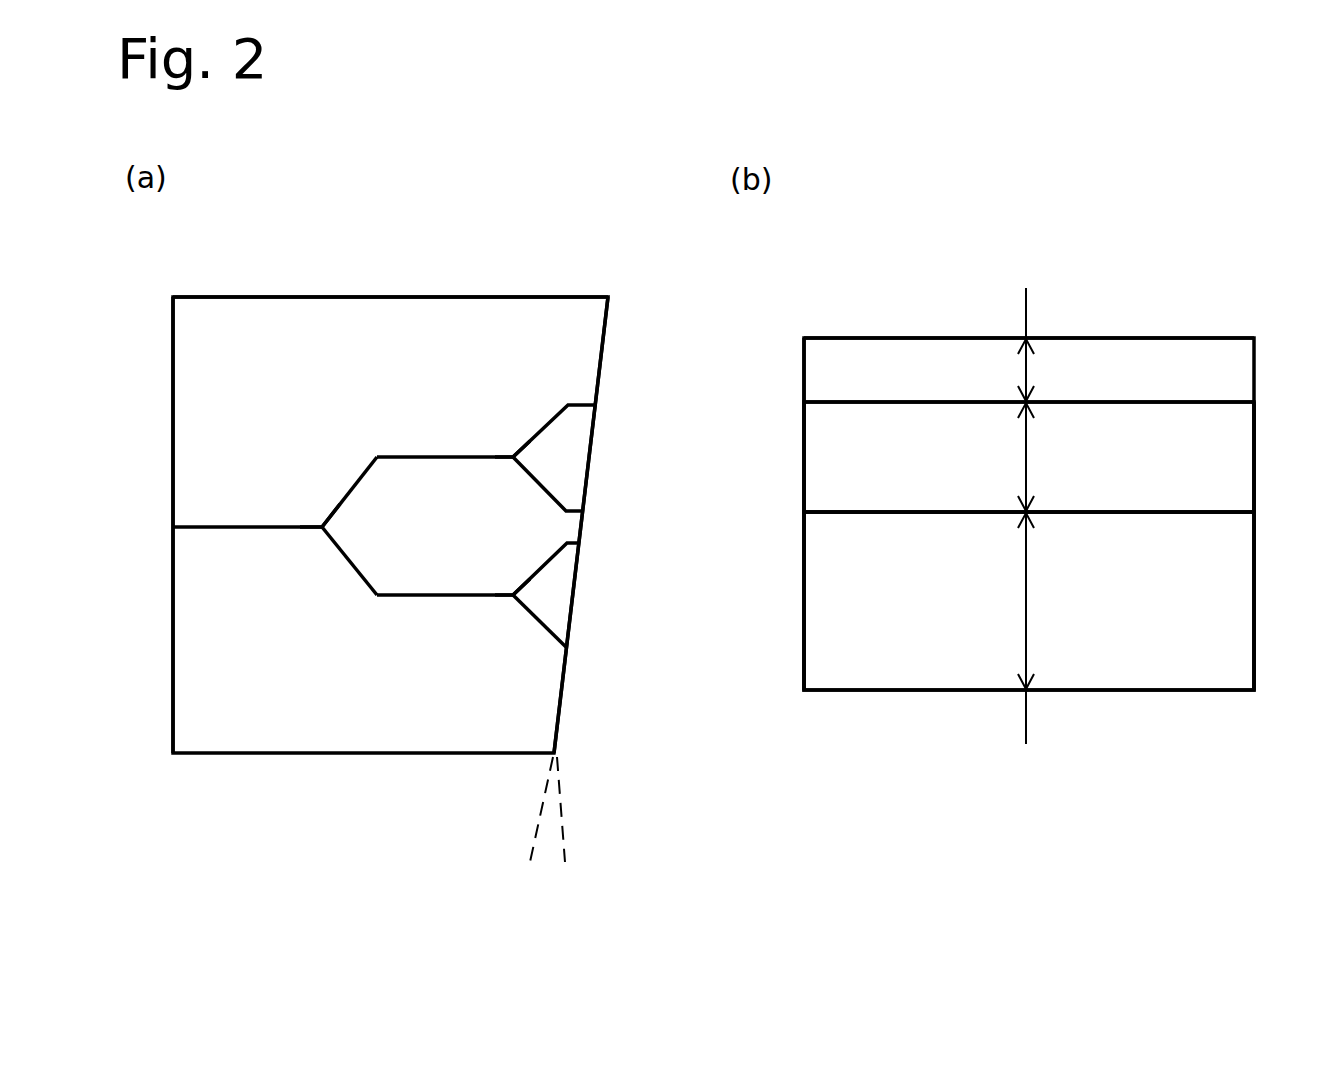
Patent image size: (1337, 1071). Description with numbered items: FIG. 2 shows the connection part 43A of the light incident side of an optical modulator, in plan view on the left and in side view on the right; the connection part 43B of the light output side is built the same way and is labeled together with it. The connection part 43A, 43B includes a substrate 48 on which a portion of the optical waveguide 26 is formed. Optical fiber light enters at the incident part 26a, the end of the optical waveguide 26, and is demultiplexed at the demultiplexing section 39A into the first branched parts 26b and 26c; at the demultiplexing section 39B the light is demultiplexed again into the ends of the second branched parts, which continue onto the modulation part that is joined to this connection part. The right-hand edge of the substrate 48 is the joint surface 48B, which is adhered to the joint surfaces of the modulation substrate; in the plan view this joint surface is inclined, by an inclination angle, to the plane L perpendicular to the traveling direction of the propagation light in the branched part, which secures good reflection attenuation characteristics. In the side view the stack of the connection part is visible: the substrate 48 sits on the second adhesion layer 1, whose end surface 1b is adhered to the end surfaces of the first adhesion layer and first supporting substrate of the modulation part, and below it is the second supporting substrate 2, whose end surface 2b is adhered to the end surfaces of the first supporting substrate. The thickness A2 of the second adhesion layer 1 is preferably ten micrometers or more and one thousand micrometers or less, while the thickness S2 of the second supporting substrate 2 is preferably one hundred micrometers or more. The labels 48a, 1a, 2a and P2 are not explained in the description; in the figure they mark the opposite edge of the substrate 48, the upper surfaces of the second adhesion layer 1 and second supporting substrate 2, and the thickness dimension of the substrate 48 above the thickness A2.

The substrate 48 is at (361, 316).
The first side edge of film 48a is at (173, 675).
The joint surface 48B is at (603, 360).
The connection part 43A is at (734, 264).
The connection part 43B is at (279, 286).
The optical waveguide 26 is at (383, 516).
The incident part 26a is at (231, 520).
The first branched part 26b is at (354, 485).
The first branched part 26c is at (440, 457).
The demultiplexing section 39A is at (325, 532).
The demultiplexing section 39B is at (512, 453).
The plane perpendicular to traveling direction of propagation light L is at (563, 827).
The second adhesion layer 1 is at (833, 473).
The upper surface of core layer 1a is at (803, 423).
The end surface of second adhesion layer 1b is at (1254, 442).
The second supporting substrate 2 is at (853, 620).
The upper surface of substrate 2a is at (804, 558).
The end surface of second supporting substrate 2b is at (1254, 558).
The protective layer thickness P2 is at (1028, 367).
The thickness of second adhesion layer A2 is at (1030, 460).
The thickness of second supporting substrate S2 is at (1028, 605).